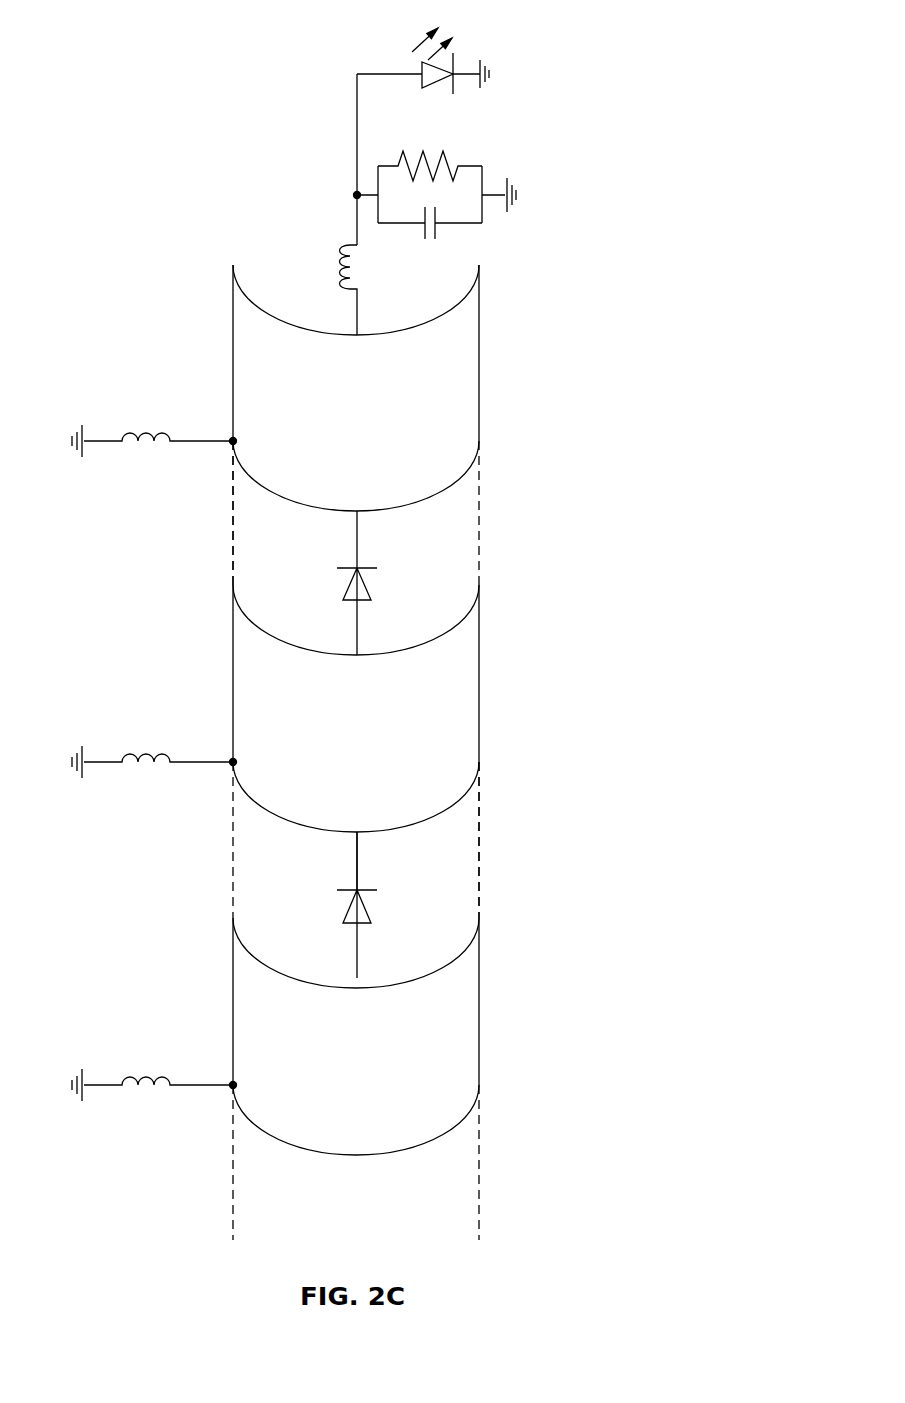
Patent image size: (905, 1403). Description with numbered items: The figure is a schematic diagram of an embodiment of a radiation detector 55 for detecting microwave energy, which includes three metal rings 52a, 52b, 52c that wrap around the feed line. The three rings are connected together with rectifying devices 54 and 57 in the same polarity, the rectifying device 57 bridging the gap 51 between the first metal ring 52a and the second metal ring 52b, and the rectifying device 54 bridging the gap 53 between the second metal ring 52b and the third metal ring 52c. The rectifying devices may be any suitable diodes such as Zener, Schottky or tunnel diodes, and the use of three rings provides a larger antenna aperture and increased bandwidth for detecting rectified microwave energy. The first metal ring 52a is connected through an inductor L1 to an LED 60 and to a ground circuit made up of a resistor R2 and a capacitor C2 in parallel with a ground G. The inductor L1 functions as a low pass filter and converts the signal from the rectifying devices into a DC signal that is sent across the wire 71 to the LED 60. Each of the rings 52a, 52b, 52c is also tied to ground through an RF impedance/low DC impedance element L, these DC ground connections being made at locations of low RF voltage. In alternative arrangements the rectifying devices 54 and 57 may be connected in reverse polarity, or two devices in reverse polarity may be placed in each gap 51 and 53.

The LED 60 is at (455, 55).
The wire 71 is at (357, 74).
The resistor R2 is at (449, 173).
The capacitor C2 is at (430, 241).
The inductor L1 is at (346, 252).
The RF impedance/low DC impedance element L is at (143, 752).
The metal ring 52a is at (481, 371).
The metal ring 52b is at (481, 708).
The metal ring 52c is at (481, 1024).
The rectifying device 57 is at (370, 590).
The rectifying device 54 is at (372, 908).
The gap 51 is at (272, 556).
The radiation detector 55 is at (536, 751).
The gap 53 is at (446, 852).